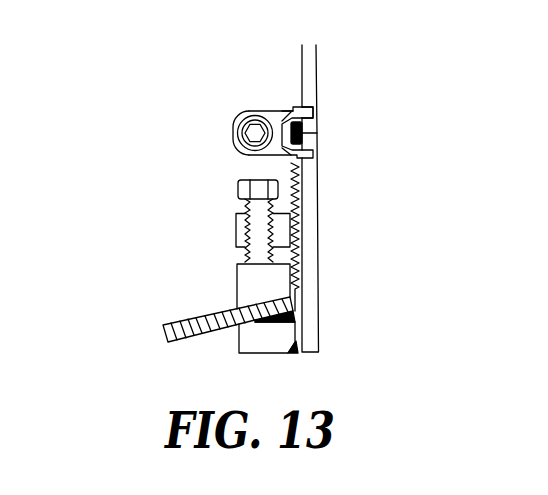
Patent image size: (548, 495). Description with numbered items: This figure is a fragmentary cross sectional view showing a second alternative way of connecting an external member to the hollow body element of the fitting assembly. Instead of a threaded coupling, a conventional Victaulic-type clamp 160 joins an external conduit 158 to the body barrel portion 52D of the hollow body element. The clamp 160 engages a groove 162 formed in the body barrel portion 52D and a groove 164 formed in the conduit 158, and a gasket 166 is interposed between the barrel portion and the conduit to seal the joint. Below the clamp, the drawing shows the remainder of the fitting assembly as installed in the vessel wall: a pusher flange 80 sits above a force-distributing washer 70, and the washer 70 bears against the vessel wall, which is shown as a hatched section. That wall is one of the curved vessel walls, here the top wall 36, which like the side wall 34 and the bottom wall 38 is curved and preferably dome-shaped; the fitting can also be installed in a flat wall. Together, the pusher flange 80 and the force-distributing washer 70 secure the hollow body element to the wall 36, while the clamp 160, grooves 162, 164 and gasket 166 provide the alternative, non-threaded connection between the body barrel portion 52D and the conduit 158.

The conduit 158 is at (319, 78).
The clamp 160 is at (234, 133).
The groove 162 is at (309, 162).
The groove 164 is at (302, 107).
The gasket 166 is at (290, 110).
The pusher flange 80 is at (236, 229).
The force-distributing washer 70 is at (237, 279).
The top wall 36 is at (182, 320).
The side wall 34 is at (111, 312).
The bottom wall 38 is at (156, 306).
The body barrel portion 52D is at (320, 292).